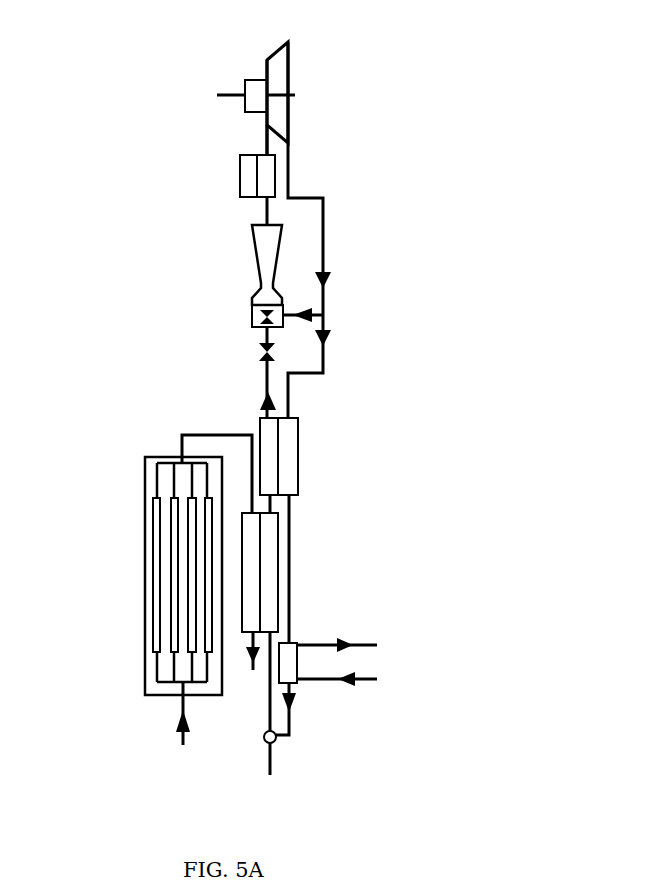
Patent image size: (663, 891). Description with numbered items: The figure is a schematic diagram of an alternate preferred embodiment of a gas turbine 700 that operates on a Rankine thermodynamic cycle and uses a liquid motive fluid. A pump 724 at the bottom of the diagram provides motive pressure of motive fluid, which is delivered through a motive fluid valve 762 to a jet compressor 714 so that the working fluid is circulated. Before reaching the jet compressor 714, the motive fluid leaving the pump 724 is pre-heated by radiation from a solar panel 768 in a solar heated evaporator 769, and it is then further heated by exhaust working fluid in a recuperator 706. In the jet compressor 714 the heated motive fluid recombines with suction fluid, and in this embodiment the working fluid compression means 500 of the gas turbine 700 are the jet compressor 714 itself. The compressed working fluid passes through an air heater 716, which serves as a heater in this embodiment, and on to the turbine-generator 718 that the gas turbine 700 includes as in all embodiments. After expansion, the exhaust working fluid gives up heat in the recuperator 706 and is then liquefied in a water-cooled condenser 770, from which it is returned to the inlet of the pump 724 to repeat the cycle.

The turbine-generator 718 is at (275, 55).
The gas turbine 700 is at (253, 137).
The air heater 716 is at (242, 175).
The jet compressor 714 is at (262, 233).
The working fluid compression means 500 is at (238, 289).
The motive fluid valve 762 is at (270, 355).
The recuperator 706 is at (292, 450).
The solar heated evaporator 769 is at (272, 547).
The solar panel 768 is at (148, 465).
The water-cooled condenser 770 is at (292, 682).
The pump 724 is at (265, 738).